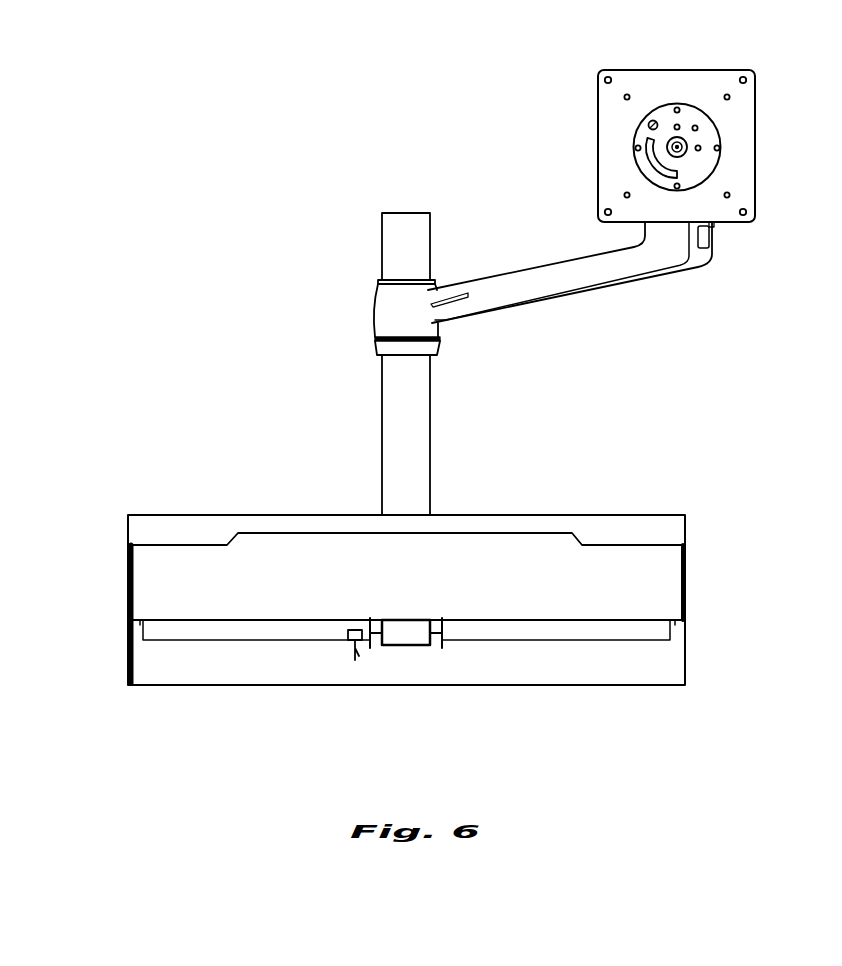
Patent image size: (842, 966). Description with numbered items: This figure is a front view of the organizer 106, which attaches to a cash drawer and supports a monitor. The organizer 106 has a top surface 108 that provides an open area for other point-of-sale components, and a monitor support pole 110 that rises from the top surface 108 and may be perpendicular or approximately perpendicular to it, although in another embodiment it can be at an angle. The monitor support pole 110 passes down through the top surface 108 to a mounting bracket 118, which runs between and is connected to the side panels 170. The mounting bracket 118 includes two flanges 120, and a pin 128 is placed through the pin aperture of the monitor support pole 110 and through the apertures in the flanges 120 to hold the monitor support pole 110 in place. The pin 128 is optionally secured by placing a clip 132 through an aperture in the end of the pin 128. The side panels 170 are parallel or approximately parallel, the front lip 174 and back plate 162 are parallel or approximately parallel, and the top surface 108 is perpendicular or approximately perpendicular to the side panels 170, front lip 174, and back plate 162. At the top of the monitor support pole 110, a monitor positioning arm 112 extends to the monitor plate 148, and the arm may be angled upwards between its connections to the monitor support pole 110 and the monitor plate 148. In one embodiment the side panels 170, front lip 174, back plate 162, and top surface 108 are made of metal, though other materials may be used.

The organizer 106 is at (103, 261).
The top surface 108 is at (602, 515).
The monitor support pole 110 is at (388, 248).
The monitor positioning arm 112 is at (513, 273).
The mounting bracket 118 is at (598, 622).
The flanges 120 is at (366, 646).
The pin 128 is at (450, 634).
The clip 132 is at (349, 648).
The monitor plate 148 is at (677, 82).
The back plate 162 is at (551, 665).
The side panels 170 is at (127, 582).
The front lip 174 is at (638, 530).